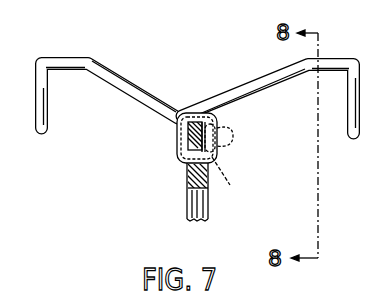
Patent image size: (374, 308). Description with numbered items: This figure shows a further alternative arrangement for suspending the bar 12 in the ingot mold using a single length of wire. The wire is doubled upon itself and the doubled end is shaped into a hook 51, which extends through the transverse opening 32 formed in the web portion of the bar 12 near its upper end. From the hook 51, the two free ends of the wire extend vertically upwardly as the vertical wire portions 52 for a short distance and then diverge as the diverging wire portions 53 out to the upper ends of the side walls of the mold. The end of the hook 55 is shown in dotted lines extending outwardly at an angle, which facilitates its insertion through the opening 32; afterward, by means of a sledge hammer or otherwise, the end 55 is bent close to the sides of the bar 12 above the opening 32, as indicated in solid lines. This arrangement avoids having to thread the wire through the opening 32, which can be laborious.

The diverging wire portions 53 is at (130, 84).
The vertical wire portions 52 is at (180, 140).
The end of the hook 55 is at (224, 137).
The transverse opening 32 is at (186, 167).
The hook 51 is at (214, 160).
The stem 12 is at (188, 208).